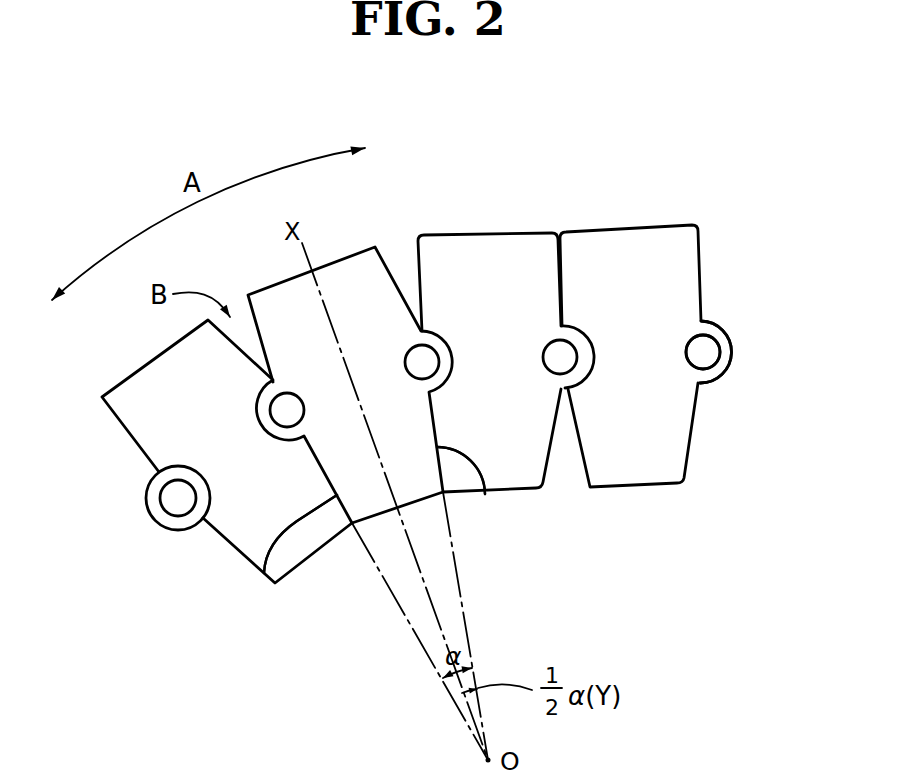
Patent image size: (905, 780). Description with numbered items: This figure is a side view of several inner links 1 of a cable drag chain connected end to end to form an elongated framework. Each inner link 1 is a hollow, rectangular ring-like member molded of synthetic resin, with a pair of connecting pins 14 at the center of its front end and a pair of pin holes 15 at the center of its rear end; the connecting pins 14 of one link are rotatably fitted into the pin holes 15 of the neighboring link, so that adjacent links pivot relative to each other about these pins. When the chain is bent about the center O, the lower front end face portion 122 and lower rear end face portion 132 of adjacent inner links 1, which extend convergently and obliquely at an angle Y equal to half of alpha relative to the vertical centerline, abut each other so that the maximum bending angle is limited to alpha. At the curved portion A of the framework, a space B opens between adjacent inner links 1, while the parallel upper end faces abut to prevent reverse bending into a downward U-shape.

The inner link 1 is at (484, 250).
The connecting pin 14 is at (172, 503).
The pin hole 15 is at (712, 352).
The lower front end face portion 122 is at (264, 575).
The lower rear end face portion 132 is at (266, 622).